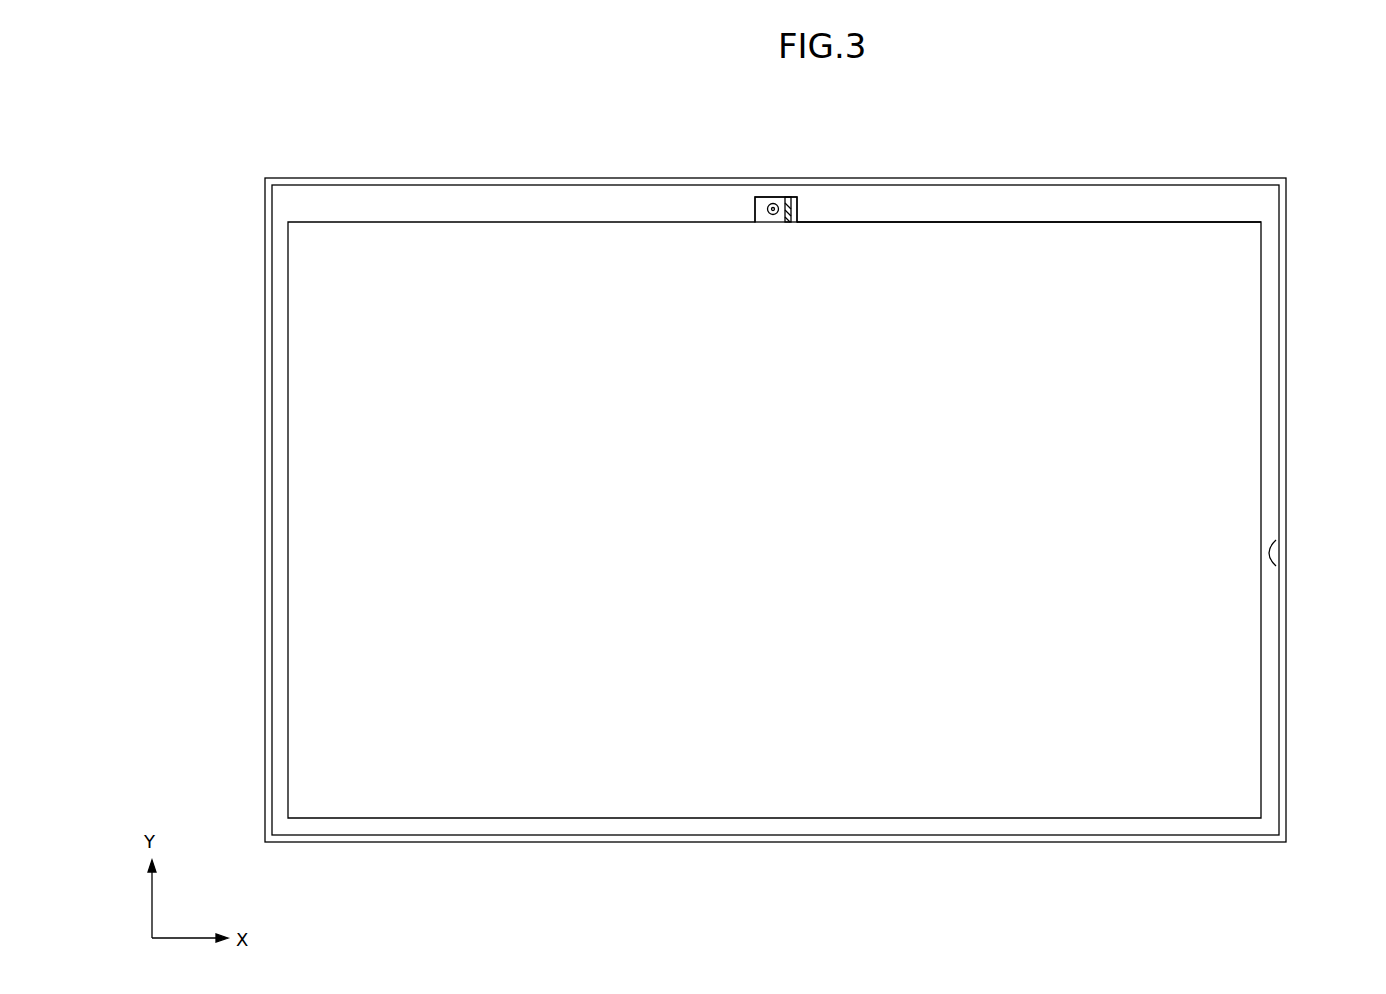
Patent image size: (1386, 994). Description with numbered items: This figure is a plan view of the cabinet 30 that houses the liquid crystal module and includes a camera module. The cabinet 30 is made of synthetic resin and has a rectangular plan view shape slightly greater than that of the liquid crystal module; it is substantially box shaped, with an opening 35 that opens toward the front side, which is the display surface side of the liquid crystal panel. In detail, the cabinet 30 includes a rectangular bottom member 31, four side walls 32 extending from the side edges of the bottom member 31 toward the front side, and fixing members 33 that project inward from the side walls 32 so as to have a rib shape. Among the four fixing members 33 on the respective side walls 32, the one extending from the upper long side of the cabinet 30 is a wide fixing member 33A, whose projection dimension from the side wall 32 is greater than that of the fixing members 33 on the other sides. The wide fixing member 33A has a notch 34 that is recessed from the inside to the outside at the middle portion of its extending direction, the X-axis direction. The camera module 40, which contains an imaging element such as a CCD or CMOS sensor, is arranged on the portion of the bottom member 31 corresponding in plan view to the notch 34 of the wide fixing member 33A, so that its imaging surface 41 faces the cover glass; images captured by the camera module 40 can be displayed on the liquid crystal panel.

The cabinet 30 is at (959, 136).
The bottom member 31 is at (1193, 448).
The side walls 32 is at (1287, 478).
The fixing members 33 is at (1003, 826).
The wide fixing member 33A is at (1131, 200).
The notch 34 is at (788, 200).
The opening 35 is at (1276, 566).
The camera module 40 is at (762, 208).
The imaging surface 41 is at (771, 203).